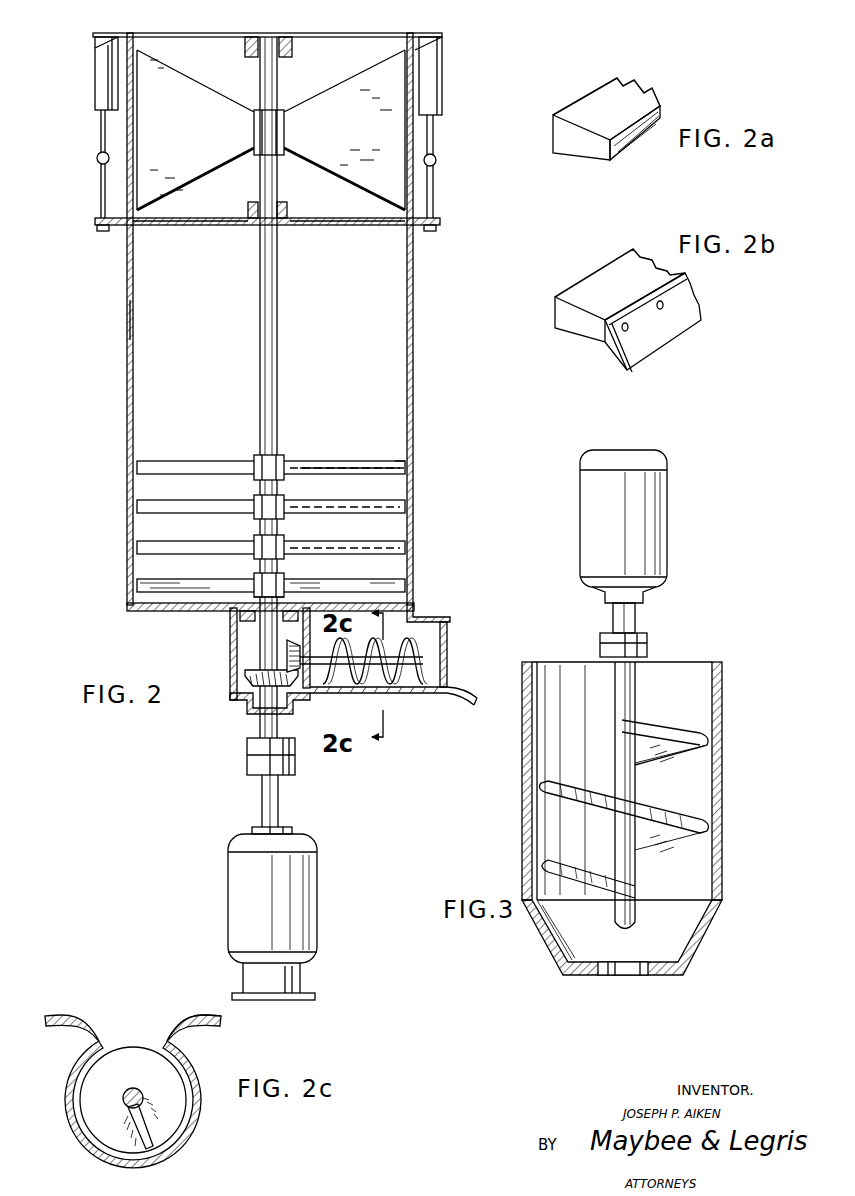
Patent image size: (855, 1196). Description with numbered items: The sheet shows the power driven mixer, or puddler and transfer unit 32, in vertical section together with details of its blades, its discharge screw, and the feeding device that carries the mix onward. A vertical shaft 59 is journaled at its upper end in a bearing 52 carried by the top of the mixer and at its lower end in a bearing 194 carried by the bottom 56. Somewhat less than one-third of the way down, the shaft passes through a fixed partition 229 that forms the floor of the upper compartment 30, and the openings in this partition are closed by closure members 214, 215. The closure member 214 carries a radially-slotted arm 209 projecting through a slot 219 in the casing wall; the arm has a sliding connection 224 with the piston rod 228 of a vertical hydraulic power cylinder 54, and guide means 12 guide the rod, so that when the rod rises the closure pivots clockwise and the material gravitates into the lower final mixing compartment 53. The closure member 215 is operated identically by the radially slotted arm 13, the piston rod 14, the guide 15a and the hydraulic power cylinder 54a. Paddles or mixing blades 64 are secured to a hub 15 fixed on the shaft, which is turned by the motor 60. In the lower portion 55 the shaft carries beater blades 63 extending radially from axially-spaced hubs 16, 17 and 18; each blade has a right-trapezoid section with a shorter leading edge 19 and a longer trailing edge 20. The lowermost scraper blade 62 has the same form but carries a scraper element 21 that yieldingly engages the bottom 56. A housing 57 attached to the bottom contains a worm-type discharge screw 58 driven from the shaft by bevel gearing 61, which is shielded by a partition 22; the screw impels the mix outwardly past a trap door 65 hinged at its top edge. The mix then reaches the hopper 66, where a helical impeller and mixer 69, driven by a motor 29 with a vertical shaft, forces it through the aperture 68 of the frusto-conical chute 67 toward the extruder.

In FIG. 2, the upper compartment 30 is at (330, 52).
In FIG. 2, the bearing 52 is at (256, 58).
In FIG. 2, the hydraulic power cylinder 54 is at (98, 78).
In FIG. 2, the hydraulic power cylinder 54a is at (438, 80).
In FIG. 2, the guide means 12 is at (97, 158).
In FIG. 2, the guide 15a is at (436, 160).
In FIG. 2, the piston rod 228 is at (101, 189).
In FIG. 2, the piston rod 14 is at (433, 187).
In FIG. 2, the sliding connection 224 is at (98, 230).
In FIG. 2, the radially slotted arm 13 is at (428, 230).
In FIG. 2, the radially-slotted arm 209 is at (118, 226).
In FIG. 2, the closure member 214 is at (196, 226).
In FIG. 2, the closure member 215 is at (333, 226).
In FIG. 2, the fixed partition 229 is at (231, 236).
In FIG. 2, the slot 219 is at (127, 287).
In FIG. 2, the lower final mixing compartment 53 is at (398, 326).
In FIG. 2, the mixer or puddler and transfer unit 32 is at (124, 323).
In FIG. 2, the paddles or mixing blades 64 is at (160, 112).
In FIG. 2, the hub 15 is at (287, 125).
In FIG. 2, the vertical shaft 59 is at (278, 286).
In FIG. 2, the hub 18 is at (254, 455).
In FIG. 2, the hub 17 is at (254, 497).
In FIG. 2, the hub 16 is at (254, 537).
In FIG. 2, the lowermost scraper blade 62 is at (398, 582).
In FIG. 2B, the lowermost scraper blade 62 is at (572, 282).
In FIG. 2, the beater blades 63 is at (352, 545).
In FIG. 2A, the beater blades 63 is at (590, 98).
In FIG. 2, the lower portion 55 is at (395, 492).
In FIG. 2, the partition 22 is at (310, 612).
In FIG. 2, the bottom 56 is at (137, 612).
In FIG. 2C, the bottom 56 is at (210, 1022).
In FIG. 2, the bearing 194 is at (243, 616).
In FIG. 2, the bevel gearing 61 is at (255, 680).
In FIG. 2, the worm-type discharge screw 58 is at (410, 648).
In FIG. 2C, the worm-type discharge screw 58 is at (130, 1062).
In FIG. 2, the housing 57 is at (410, 697).
In FIG. 2C, the housing 57 is at (198, 1128).
In FIG. 2, the trap door 65 is at (447, 658).
In FIG. 2, the motor 60 is at (232, 868).
In FIG. 2A, the trailing edge 20 is at (553, 135).
In FIG. 2A, the leading edge 19 is at (630, 140).
In FIG. 2B, the scraper element 21 is at (663, 335).
In FIG. 3, the motor 29 is at (653, 520).
In FIG. 3, the hopper 66 is at (722, 700).
In FIG. 3, the chute 67 is at (712, 932).
In FIG. 3, the aperture 68 is at (628, 968).
In FIG. 3, the helical impeller and mixer 69 is at (680, 752).